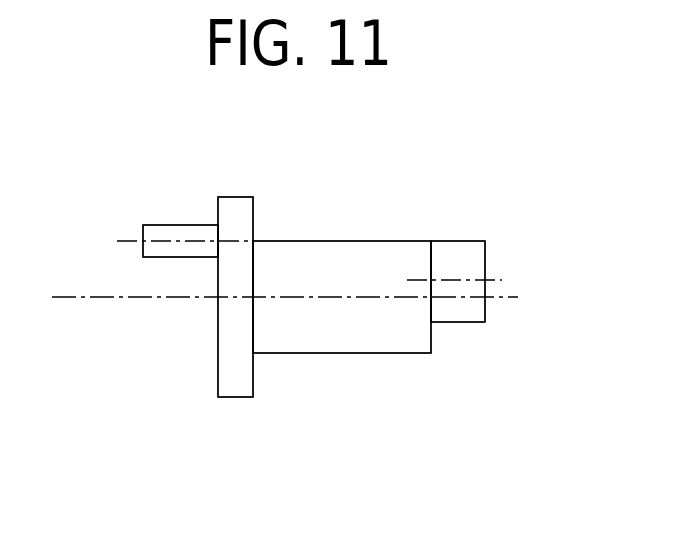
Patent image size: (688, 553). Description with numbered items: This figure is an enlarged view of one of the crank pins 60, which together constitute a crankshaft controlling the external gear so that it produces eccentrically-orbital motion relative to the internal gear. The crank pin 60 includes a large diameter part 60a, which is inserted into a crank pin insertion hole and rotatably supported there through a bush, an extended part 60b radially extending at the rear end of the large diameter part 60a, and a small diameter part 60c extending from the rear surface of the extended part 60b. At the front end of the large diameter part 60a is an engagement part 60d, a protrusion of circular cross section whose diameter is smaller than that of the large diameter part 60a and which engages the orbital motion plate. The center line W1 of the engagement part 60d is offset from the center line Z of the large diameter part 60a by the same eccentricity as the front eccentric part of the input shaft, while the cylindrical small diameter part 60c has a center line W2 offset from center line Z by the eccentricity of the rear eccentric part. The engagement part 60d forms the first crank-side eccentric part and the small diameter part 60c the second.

The crank pin 60 is at (340, 241).
The large diameter part 60a is at (338, 340).
The extended part 60b is at (233, 385).
The small diameter part 60c is at (162, 232).
The engagement part 60d is at (443, 250).
The center line of the engagement part W1 is at (507, 277).
The center line of the small diameter part W2 is at (130, 238).
The center line of the large diameter part Z is at (106, 298).